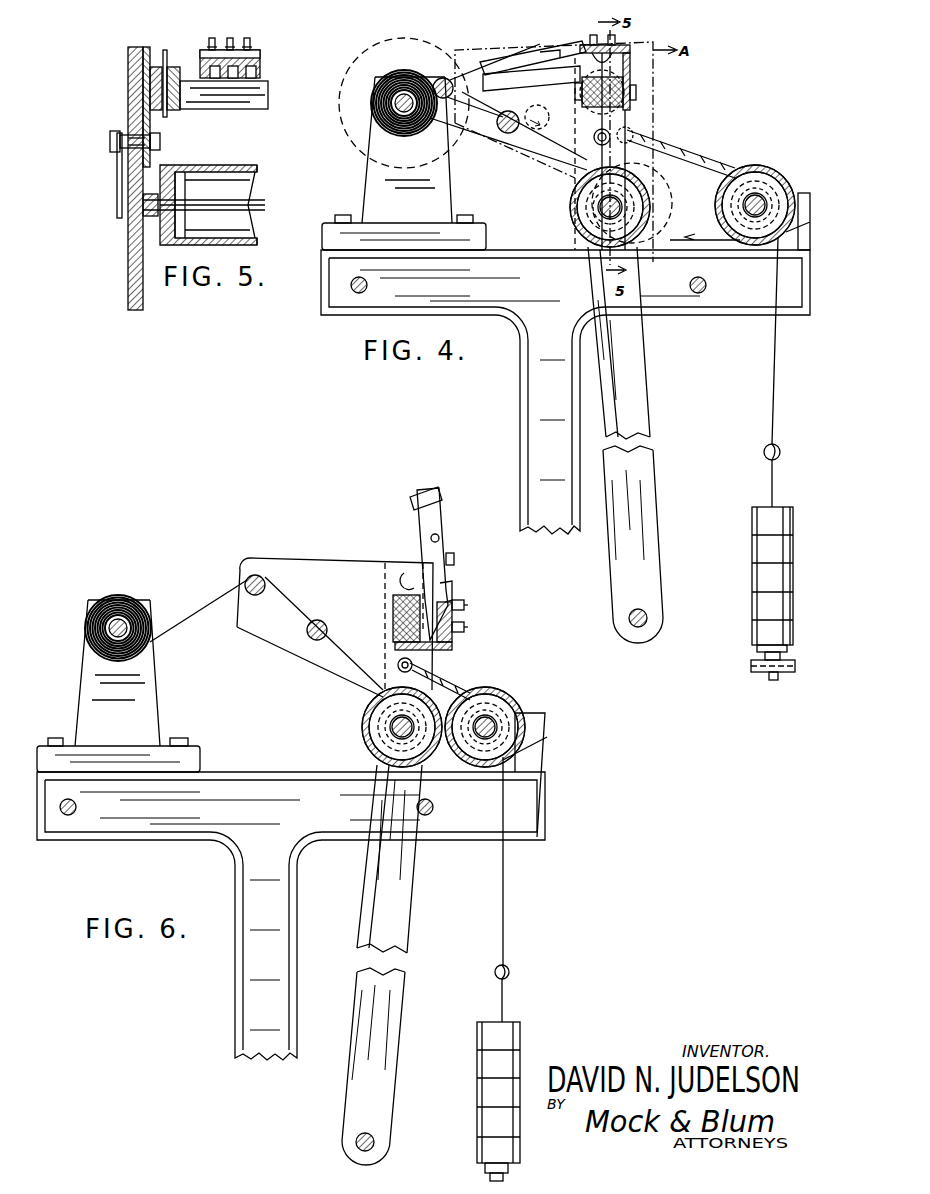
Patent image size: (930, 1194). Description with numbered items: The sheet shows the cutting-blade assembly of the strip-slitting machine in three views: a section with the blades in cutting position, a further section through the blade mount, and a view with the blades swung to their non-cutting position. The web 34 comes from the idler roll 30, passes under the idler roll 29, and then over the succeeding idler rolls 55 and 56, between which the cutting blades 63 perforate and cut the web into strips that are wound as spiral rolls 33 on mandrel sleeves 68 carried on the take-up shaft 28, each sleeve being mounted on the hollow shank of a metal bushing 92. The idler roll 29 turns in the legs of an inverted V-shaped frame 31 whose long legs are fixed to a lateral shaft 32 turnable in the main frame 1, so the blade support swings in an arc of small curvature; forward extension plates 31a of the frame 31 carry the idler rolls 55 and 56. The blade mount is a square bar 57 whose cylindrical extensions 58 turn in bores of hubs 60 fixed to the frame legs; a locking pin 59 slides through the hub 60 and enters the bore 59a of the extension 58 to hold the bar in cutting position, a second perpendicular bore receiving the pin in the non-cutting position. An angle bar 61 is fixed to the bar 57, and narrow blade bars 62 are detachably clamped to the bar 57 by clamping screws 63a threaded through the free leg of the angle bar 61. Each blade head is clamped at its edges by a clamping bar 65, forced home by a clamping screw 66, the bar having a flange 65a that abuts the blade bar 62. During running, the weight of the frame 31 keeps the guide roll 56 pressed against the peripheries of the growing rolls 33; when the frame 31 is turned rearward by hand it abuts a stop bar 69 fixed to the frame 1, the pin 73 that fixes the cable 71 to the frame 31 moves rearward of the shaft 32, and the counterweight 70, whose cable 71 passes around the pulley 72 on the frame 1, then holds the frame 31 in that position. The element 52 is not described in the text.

In FIG. 4, the frame 1 is at (520, 376).
In FIG. 6, the frame 1 is at (160, 844).
In FIG. 4, the take-up shaft 28 is at (382, 120).
In FIG. 6, the take-up shaft 28 is at (90, 633).
In FIG. 5, the idler roll 29 is at (232, 165).
In FIG. 4, the idler roll 29 is at (650, 190).
In FIG. 6, the idler roll 29 is at (365, 740).
In FIG. 4, the idler roll 30 is at (770, 170).
In FIG. 6, the idler roll 30 is at (510, 700).
In FIG. 5, the frame 31 is at (130, 253).
In FIG. 4, the frame 31 is at (640, 358).
In FIG. 6, the frame 31 is at (400, 902).
In FIG. 4, the forward extension plates 31a is at (498, 41).
In FIG. 6, the forward extension plates 31a is at (300, 552).
In FIG. 4, the lateral shaft 32 is at (645, 612).
In FIG. 6, the lateral shaft 32 is at (373, 1142).
In FIG. 4, the spiral rolls 33 is at (400, 72).
In FIG. 6, the spiral rolls 33 is at (92, 648).
In FIG. 4, the web 34 is at (540, 150).
In FIG. 6, the web 34 is at (345, 690).
In FIG. 4, the guide 52 is at (564, 99).
In FIG. 4, the idler roll 55 is at (508, 134).
In FIG. 6, the idler roll 55 is at (306, 630).
In FIG. 4, the idler roll 56 is at (447, 78).
In FIG. 6, the idler roll 56 is at (245, 595).
In FIG. 5, the square bar 57 is at (226, 100).
In FIG. 6, the square bar 57 is at (402, 595).
In FIG. 5, the cylindrical extensions 58 is at (130, 90).
In FIG. 4, the cylindrical extensions 58 is at (600, 151).
In FIG. 6, the cylindrical extensions 58 is at (393, 627).
In FIG. 5, the locking pin 59 is at (166, 50).
In FIG. 4, the locking pin 59 is at (599, 154).
In FIG. 6, the locking pin 59 is at (410, 573).
In FIG. 5, the bore 59a is at (186, 70).
In FIG. 6, the bore 59a is at (395, 612).
In FIG. 5, the hubs 60 is at (150, 52).
In FIG. 5, the angle bar 61 is at (245, 58).
In FIG. 4, the angle bar 61 is at (630, 62).
In FIG. 6, the angle bar 61 is at (453, 646).
In FIG. 5, the blade bars 62 is at (252, 66).
In FIG. 4, the blade bars 62 is at (548, 80).
In FIG. 4, the cutting blades 63 is at (497, 118).
In FIG. 6, the cutting blades 63 is at (416, 495).
In FIG. 5, the clamping screw 63a is at (212, 38).
In FIG. 4, the clamping screw 63a is at (594, 35).
In FIG. 6, the clamping screw 63a is at (470, 626).
In FIG. 4, the clamping bar 65 is at (540, 40).
In FIG. 6, the clamping bar 65 is at (440, 525).
In FIG. 6, the flange 65a is at (452, 588).
In FIG. 4, the clamping screw 66 is at (552, 48).
In FIG. 6, the clamping screw 66 is at (455, 558).
In FIG. 4, the mandrel sleeves 68 is at (378, 108).
In FIG. 6, the mandrel sleeves 68 is at (90, 620).
In FIG. 4, the stop bar 69 is at (703, 290).
In FIG. 6, the stop bar 69 is at (428, 815).
In FIG. 4, the counterweight 70 is at (752, 507).
In FIG. 6, the counterweight 70 is at (520, 1024).
In FIG. 5, the cable 71 is at (117, 172).
In FIG. 4, the cable 71 is at (668, 160).
In FIG. 6, the cable 71 is at (478, 688).
In FIG. 4, the pulley 72 is at (735, 195).
In FIG. 6, the pulley 72 is at (495, 690).
In FIG. 5, the pin 73 is at (118, 136).
In FIG. 4, the pin 73 is at (610, 133).
In FIG. 6, the pin 73 is at (412, 666).
In FIG. 4, the bushing 92 is at (377, 97).
In FIG. 6, the bushing 92 is at (150, 618).